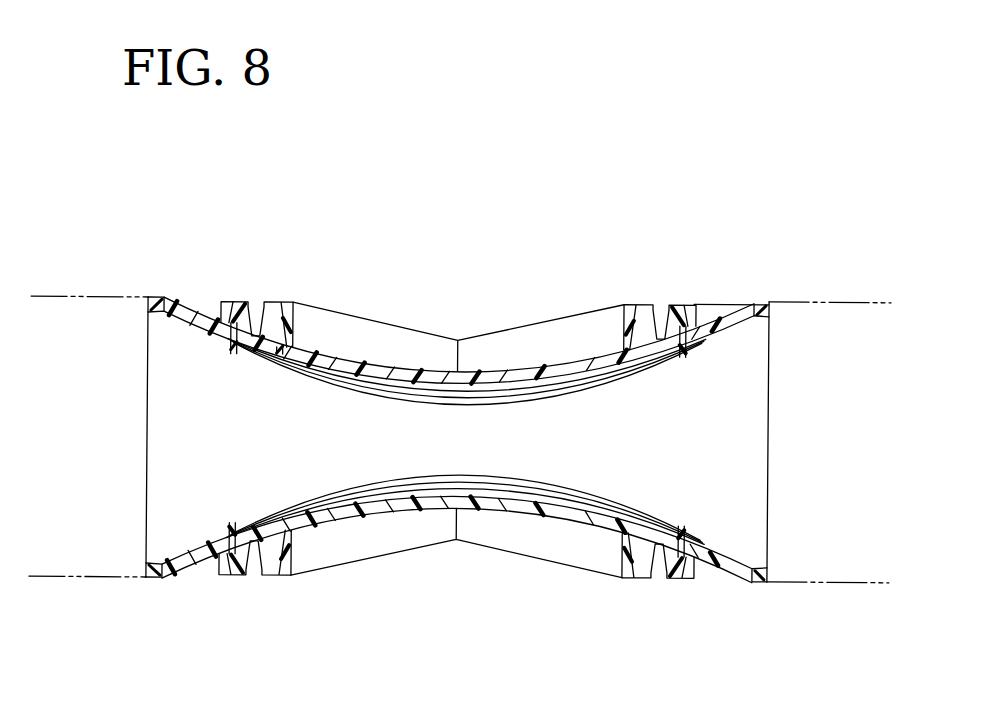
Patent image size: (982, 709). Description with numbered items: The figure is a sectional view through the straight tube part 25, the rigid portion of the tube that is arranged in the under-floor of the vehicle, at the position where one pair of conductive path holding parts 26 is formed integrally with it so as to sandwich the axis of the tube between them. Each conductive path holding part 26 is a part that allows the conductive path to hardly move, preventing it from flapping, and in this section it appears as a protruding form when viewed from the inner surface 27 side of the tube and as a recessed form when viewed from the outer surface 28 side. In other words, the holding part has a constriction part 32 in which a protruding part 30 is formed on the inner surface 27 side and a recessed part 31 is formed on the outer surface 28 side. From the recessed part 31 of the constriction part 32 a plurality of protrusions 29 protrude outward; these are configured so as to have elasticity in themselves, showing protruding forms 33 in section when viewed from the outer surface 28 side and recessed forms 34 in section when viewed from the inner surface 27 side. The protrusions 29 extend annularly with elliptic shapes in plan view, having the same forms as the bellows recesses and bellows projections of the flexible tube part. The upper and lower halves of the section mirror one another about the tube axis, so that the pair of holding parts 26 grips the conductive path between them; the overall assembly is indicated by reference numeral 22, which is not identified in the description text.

The seal assembly 22 is at (592, 214).
The straight tube part 25 is at (756, 583).
The conductive path holding part 26 is at (410, 347).
The inner surface 27 is at (771, 317).
The outer surface 28 is at (762, 299).
The protrusions 29 is at (685, 300).
The protruding part 30 is at (573, 372).
The recessed part 31 is at (574, 374).
The constriction part 32 is at (661, 438).
The protruding forms 33 is at (274, 300).
The recessed forms 34 is at (278, 358).